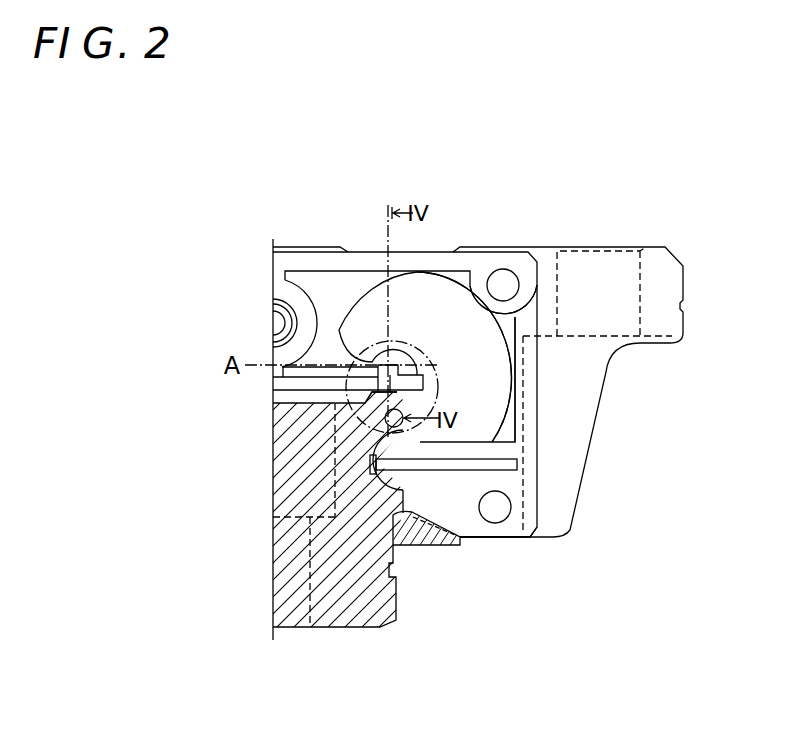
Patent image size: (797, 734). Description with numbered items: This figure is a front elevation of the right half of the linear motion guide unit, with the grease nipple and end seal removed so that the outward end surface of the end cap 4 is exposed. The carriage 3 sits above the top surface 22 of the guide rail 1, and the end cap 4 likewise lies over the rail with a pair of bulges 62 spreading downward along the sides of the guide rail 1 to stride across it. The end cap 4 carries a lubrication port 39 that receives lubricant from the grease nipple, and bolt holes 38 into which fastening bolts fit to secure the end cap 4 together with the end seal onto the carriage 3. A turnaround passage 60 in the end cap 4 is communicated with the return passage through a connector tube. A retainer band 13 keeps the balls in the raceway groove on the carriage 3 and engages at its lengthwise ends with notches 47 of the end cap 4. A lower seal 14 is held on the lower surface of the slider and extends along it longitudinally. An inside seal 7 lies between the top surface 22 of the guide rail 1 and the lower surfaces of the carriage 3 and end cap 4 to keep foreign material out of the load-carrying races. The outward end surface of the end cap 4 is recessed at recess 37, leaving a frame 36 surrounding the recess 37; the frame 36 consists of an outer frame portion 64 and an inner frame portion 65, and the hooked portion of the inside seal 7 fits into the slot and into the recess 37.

The guide rail 1 is at (343, 577).
The carriage 3 is at (578, 427).
The end cap 4 is at (458, 275).
The inside seal 7 is at (385, 366).
The retainer band 13 is at (460, 463).
The lower seal 14 is at (423, 543).
The top surface 22 is at (303, 394).
The frame 36 is at (330, 372).
The recess 37 is at (508, 330).
The bolt holes 38 is at (503, 277).
The lubrication port 39 is at (275, 323).
The notches 47 is at (505, 453).
The turnaround passage 60 is at (490, 367).
The bulges 62 is at (503, 480).
The outer frame portion 64 is at (307, 260).
The inner frame portion 65 is at (303, 383).